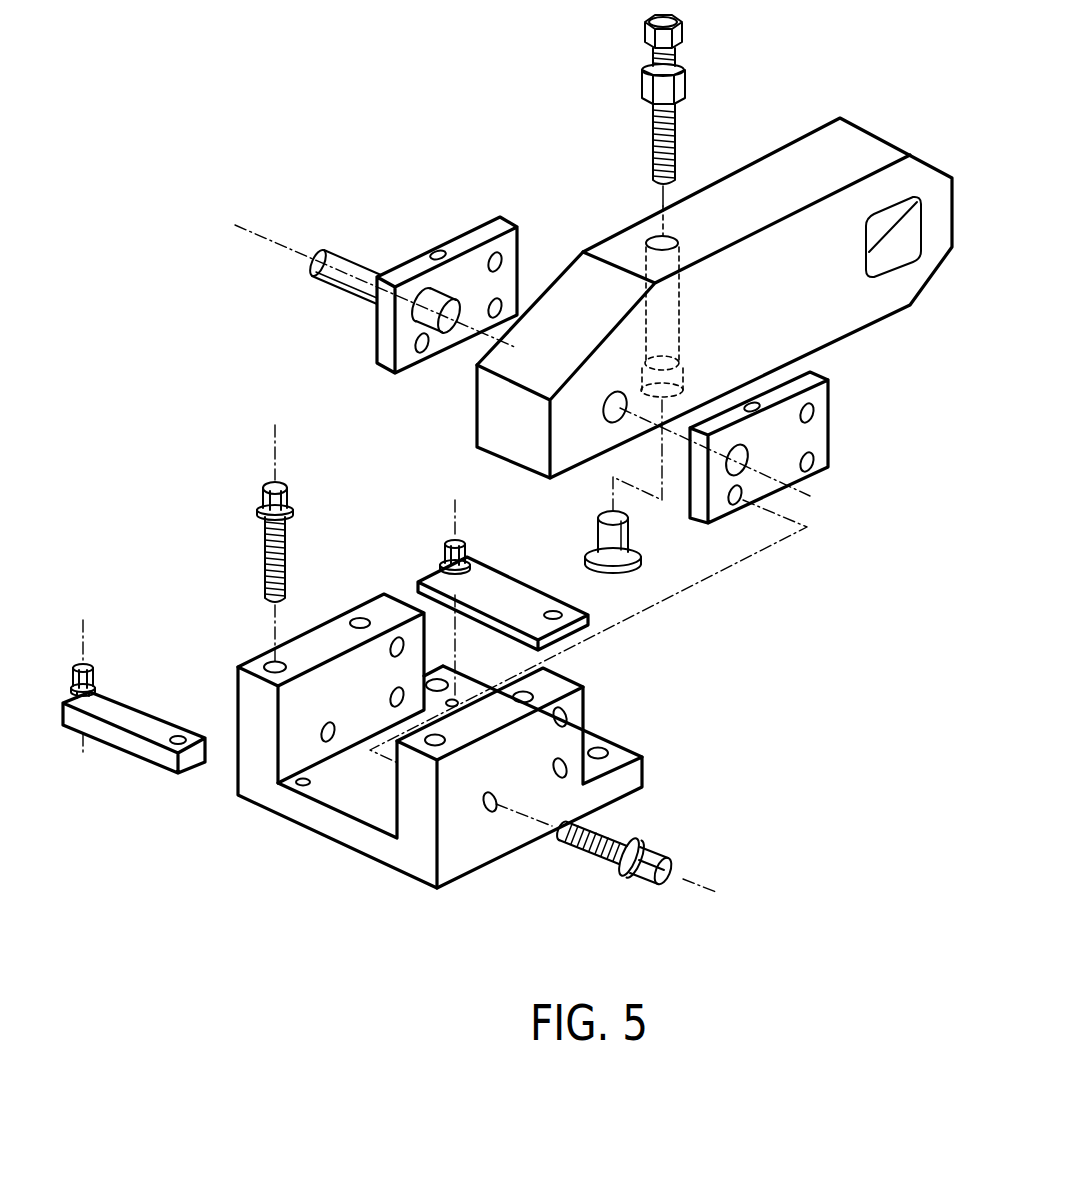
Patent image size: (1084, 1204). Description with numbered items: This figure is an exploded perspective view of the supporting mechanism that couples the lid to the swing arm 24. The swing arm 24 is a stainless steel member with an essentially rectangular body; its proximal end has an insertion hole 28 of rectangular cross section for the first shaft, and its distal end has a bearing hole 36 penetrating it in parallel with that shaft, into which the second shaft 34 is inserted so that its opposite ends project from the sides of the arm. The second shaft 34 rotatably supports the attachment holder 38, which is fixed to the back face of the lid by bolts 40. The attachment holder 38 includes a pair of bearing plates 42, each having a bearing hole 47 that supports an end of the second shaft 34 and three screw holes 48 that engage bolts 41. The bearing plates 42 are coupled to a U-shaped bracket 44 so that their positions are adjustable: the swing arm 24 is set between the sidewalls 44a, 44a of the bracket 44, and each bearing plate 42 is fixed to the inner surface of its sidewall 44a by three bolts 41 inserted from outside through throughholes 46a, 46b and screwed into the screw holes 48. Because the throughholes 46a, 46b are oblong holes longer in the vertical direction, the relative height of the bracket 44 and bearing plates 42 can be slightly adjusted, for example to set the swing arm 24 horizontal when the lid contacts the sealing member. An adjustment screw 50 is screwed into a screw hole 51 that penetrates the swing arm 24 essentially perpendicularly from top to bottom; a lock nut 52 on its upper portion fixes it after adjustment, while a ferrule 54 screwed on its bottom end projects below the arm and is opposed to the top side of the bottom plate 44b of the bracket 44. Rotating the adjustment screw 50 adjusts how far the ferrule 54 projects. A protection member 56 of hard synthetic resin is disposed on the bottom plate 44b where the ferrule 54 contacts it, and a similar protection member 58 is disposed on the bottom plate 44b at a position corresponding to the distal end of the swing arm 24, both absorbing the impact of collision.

The swing arm 24 is at (714, 311).
The insertion hole 28 is at (908, 213).
The second shaft 34 is at (343, 252).
The bearing hole 36 is at (611, 424).
The attachment holder 38 is at (404, 679).
The bolt 40 is at (263, 558).
The bolt 41 is at (661, 870).
The bearing plate 42 is at (562, 466).
The U-shaped bracket 44 is at (425, 738).
The sidewall 44a is at (323, 640).
The bottom plate 44b is at (362, 802).
The throughhole 46a is at (323, 736).
The throughhole 46b is at (396, 688).
The bearing hole 47 is at (745, 456).
The screw hole 48 is at (499, 307).
The adjustment screw 50 is at (672, 110).
The screw hole 51 is at (657, 237).
The lock nut 52 is at (642, 96).
The ferrule 54 is at (641, 548).
The protection member 56 is at (492, 577).
The protection member 58 is at (140, 748).